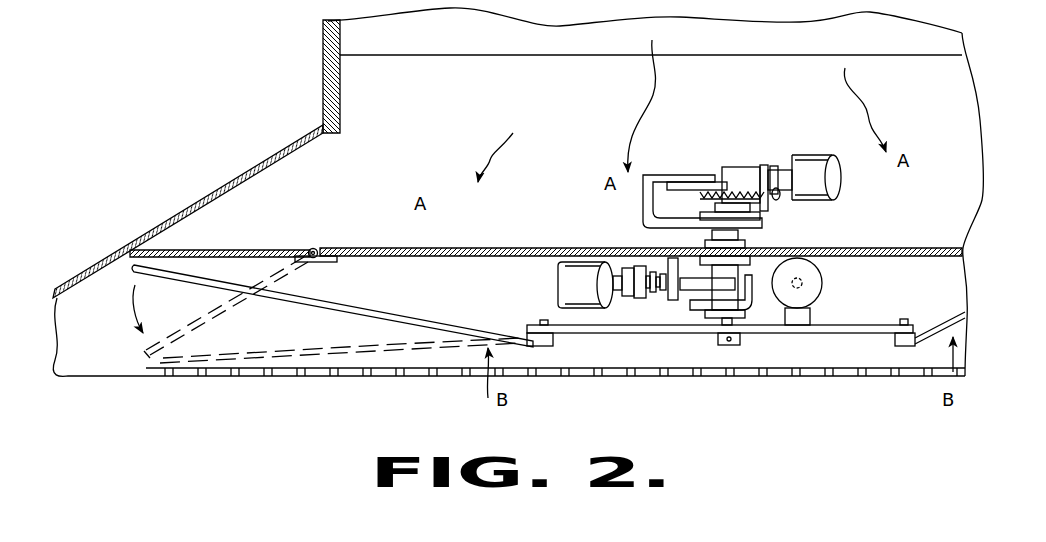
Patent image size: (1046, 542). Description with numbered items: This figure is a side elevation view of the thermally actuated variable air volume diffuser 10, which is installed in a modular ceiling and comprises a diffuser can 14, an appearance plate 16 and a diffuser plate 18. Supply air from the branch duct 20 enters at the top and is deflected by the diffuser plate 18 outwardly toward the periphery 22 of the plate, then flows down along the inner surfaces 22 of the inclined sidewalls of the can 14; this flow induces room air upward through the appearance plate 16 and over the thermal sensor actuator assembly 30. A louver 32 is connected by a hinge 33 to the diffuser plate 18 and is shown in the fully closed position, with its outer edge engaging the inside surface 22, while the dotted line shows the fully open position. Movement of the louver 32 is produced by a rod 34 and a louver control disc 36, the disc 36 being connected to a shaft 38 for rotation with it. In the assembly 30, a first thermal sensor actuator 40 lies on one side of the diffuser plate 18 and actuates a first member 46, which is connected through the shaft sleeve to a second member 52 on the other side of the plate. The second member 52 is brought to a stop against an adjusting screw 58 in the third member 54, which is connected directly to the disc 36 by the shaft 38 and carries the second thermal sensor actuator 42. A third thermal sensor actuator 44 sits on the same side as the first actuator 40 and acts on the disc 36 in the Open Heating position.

The variable air volume diffuser 10 is at (170, 190).
The diffuser can 14 is at (239, 178).
The appearance plate 16 is at (421, 377).
The diffuser plate 18 is at (378, 236).
The branch duct 20 is at (470, 38).
The periphery / inner surfaces 22 is at (246, 219).
The thermal sensor actuator assembly 30 is at (522, 278).
The louver 32 is at (238, 250).
The hinge 33 is at (313, 248).
The rod 34 is at (306, 306).
The louver control disc 36 is at (620, 333).
The shaft 38 is at (628, 296).
The first thermal sensor actuator 40 is at (562, 295).
The second thermal sensor actuator 42 is at (840, 185).
The third thermal sensor actuator 44 is at (815, 283).
The first member 46 is at (795, 309).
The second member 52 is at (644, 200).
The third member 54 is at (765, 170).
The adjusting screw 58 is at (779, 199).